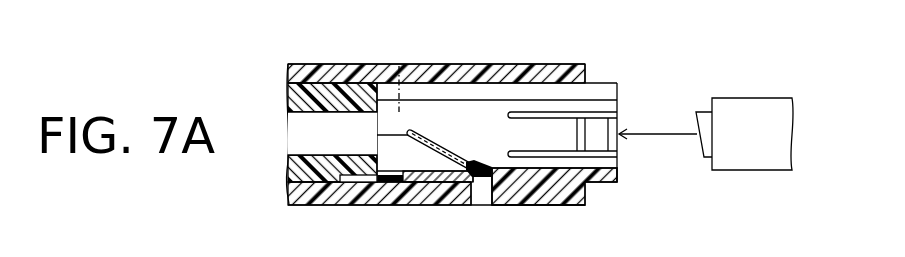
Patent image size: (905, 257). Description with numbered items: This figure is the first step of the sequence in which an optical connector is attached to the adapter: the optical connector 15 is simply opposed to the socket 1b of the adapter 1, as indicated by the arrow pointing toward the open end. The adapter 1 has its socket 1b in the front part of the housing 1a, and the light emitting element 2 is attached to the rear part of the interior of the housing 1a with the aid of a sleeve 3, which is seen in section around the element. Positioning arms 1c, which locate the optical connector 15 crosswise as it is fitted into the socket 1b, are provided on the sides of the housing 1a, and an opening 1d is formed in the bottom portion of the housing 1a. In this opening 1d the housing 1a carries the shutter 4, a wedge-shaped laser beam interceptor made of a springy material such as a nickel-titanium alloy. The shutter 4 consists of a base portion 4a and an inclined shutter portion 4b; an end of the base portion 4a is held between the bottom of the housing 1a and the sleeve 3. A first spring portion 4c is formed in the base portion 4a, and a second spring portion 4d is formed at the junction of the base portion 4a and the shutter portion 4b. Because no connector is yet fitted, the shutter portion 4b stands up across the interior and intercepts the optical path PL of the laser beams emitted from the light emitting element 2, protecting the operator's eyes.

The adapter 1 is at (462, 128).
The housing 1a is at (517, 76).
The socket 1b is at (560, 172).
The positioning arms 1c is at (594, 130).
The opening 1d is at (487, 206).
The light emitting element 2 is at (310, 127).
The sleeve 3 is at (353, 90).
The shutter 4 is at (410, 139).
The base portion 4a is at (351, 183).
The shutter portion 4b is at (406, 131).
The first spring portion 4c is at (388, 183).
The second spring portion 4d is at (480, 186).
The optical connector 15 is at (757, 112).
The optical path PL is at (404, 65).